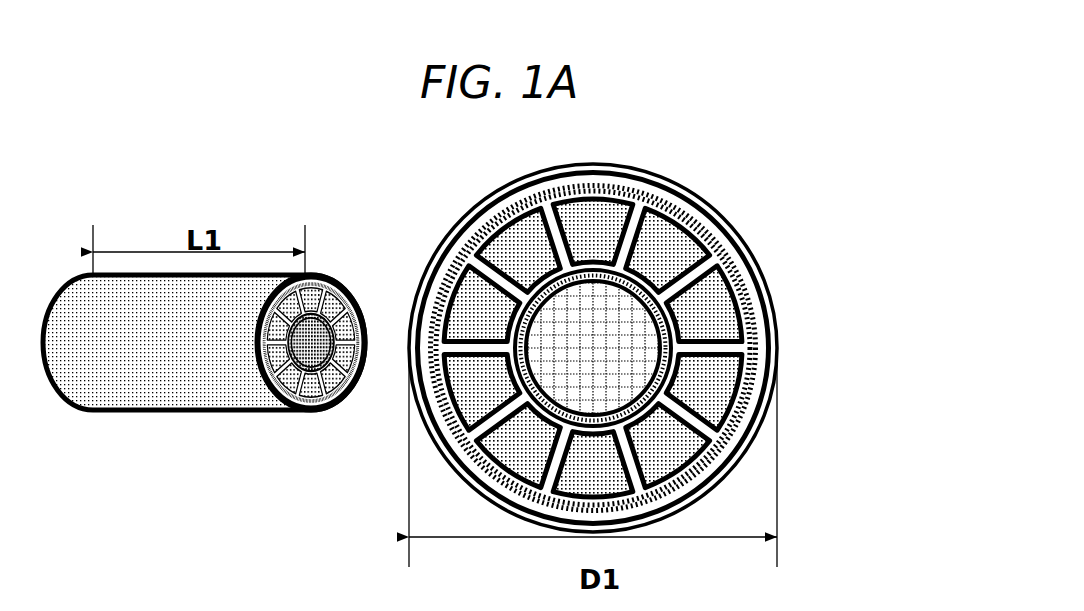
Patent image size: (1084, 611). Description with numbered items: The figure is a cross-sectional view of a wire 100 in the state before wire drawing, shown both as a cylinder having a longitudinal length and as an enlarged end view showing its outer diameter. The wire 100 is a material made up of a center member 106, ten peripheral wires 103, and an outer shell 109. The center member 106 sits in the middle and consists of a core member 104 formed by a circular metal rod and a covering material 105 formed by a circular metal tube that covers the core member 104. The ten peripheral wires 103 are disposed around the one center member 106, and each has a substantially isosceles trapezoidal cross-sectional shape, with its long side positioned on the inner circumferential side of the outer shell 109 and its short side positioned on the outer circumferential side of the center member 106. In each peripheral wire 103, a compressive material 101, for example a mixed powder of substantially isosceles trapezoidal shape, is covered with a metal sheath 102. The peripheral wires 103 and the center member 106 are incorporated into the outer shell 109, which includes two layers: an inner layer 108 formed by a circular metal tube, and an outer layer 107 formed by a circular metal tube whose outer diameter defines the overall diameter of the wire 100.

The wire 100 is at (196, 418).
The compressive material 101 is at (773, 363).
The metal sheath 102 is at (775, 333).
The peripheral wire 103 is at (701, 348).
The core member 104 is at (762, 290).
The covering material 105 is at (752, 253).
The center member 106 is at (695, 348).
The outer layer 107 is at (700, 182).
The inner layer 108 is at (712, 200).
The outer shell 109 is at (656, 330).